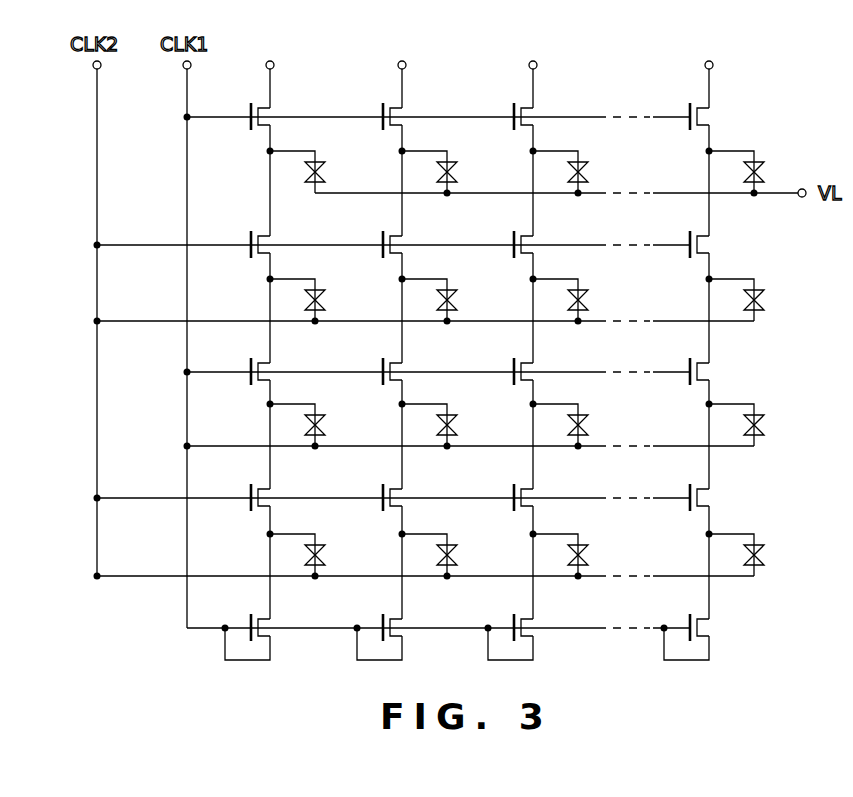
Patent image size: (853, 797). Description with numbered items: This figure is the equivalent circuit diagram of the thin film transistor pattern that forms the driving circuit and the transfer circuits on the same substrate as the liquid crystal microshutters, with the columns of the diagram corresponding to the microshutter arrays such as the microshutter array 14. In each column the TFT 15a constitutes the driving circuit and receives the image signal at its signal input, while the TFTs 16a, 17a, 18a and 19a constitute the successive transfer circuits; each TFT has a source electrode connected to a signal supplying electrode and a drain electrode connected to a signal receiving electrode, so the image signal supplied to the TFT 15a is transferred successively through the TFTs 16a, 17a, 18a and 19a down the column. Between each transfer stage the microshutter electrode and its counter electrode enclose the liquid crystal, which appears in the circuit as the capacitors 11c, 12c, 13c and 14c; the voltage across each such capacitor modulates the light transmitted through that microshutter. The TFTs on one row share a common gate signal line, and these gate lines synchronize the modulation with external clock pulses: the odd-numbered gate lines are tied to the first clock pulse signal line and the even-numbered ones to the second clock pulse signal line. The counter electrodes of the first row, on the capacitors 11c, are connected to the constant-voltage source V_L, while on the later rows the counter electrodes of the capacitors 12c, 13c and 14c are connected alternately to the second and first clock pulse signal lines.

The microshutter array 14 is at (490, 326).
The TFT of driving circuit 15a is at (471, 110).
The TFT of transfer circuit 16a is at (426, 238).
The TFT of transfer circuit 17a is at (471, 365).
The TFT of transfer circuit 18a is at (426, 491).
The TFT of transfer circuit 19a is at (471, 631).
The capacitor due to liquid crystal 11c is at (536, 172).
The capacitor due to liquid crystal 12c is at (451, 300).
The capacitor due to liquid crystal 13c is at (496, 425).
The capacitor due to liquid crystal 14c is at (451, 555).